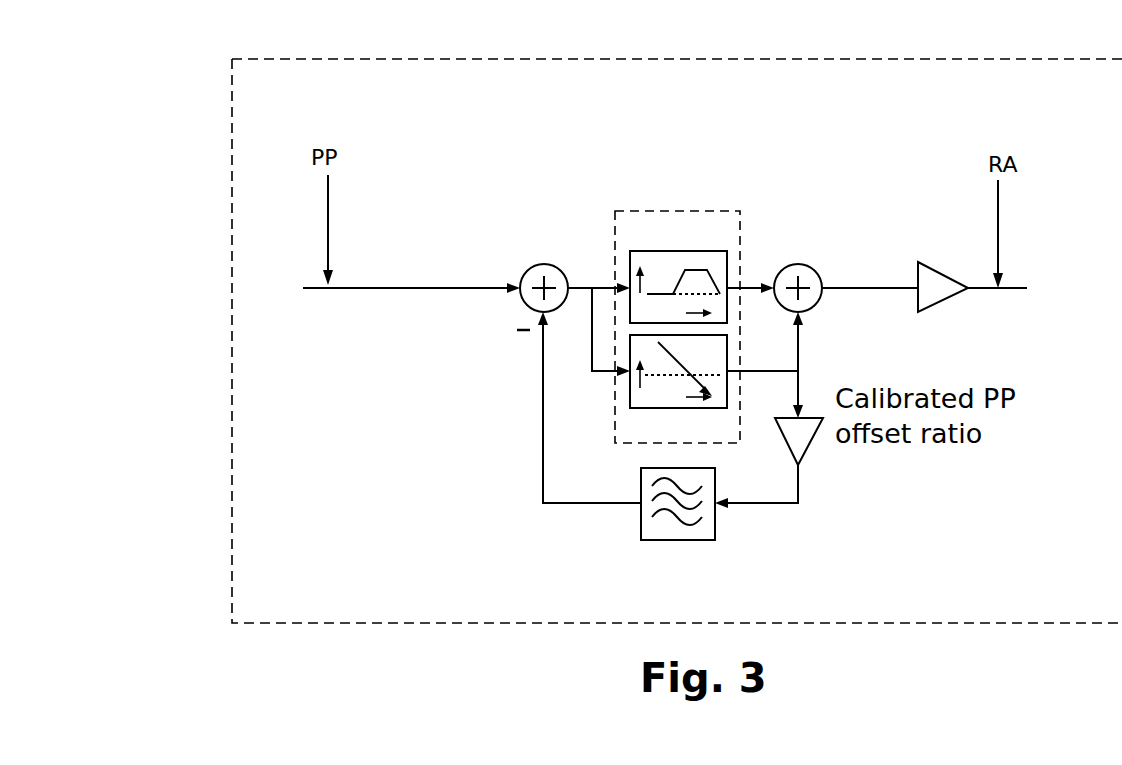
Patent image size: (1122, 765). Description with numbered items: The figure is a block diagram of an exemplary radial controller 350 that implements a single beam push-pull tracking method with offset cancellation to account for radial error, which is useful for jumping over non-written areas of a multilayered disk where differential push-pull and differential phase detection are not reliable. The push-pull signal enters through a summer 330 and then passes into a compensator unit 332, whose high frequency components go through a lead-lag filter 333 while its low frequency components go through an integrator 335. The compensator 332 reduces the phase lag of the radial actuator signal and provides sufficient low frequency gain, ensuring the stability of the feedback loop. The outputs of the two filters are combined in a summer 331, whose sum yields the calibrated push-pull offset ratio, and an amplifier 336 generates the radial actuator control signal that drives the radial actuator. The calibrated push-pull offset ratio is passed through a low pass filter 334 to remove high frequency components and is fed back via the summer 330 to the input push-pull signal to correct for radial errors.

The summer 330 is at (531, 256).
The summer 331 is at (815, 293).
The compensator unit 332 is at (669, 211).
The lead-lag filter 333 is at (703, 248).
The low pass filter 334 is at (715, 538).
The integrator 335 is at (667, 410).
The amplifier 336 is at (918, 262).
The controller 350 is at (198, 298).